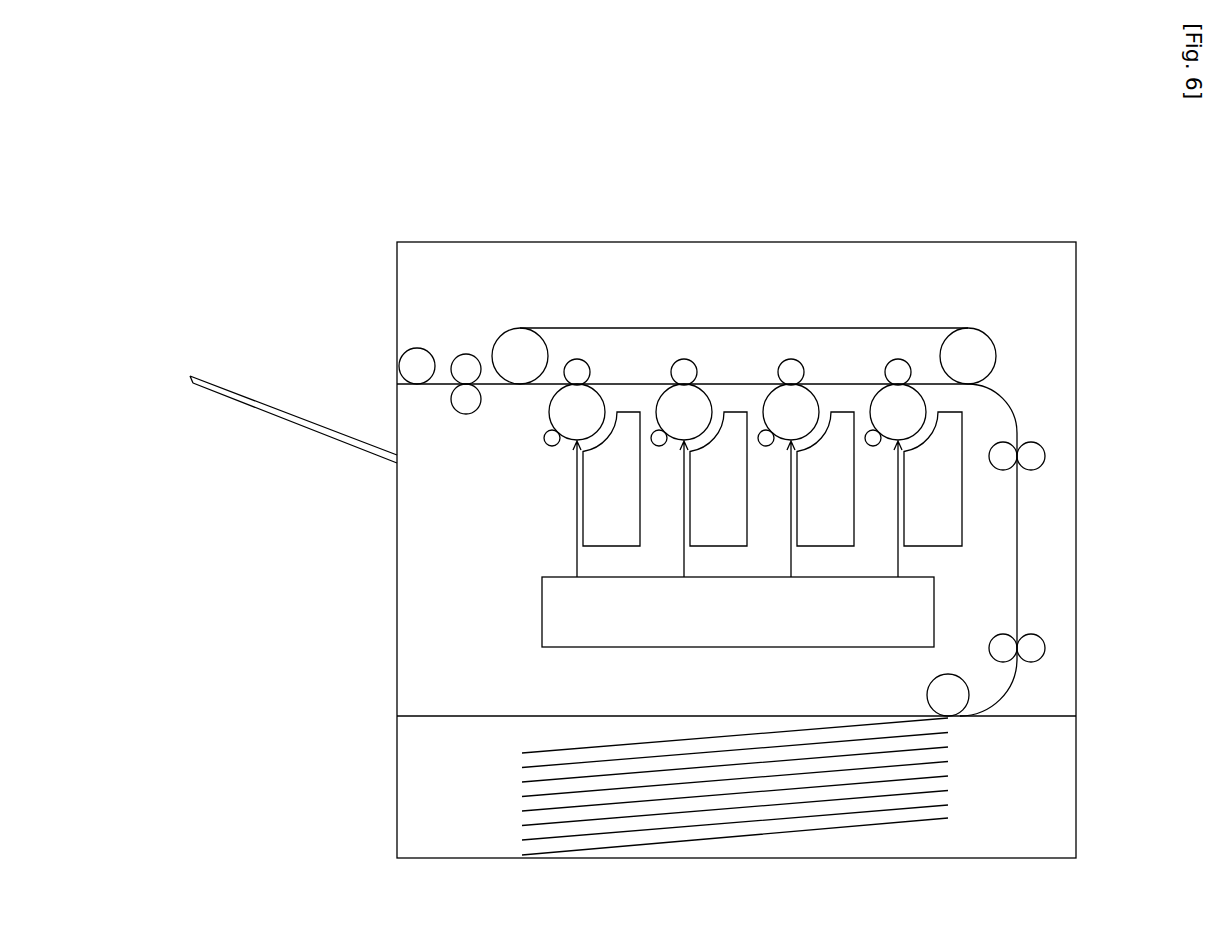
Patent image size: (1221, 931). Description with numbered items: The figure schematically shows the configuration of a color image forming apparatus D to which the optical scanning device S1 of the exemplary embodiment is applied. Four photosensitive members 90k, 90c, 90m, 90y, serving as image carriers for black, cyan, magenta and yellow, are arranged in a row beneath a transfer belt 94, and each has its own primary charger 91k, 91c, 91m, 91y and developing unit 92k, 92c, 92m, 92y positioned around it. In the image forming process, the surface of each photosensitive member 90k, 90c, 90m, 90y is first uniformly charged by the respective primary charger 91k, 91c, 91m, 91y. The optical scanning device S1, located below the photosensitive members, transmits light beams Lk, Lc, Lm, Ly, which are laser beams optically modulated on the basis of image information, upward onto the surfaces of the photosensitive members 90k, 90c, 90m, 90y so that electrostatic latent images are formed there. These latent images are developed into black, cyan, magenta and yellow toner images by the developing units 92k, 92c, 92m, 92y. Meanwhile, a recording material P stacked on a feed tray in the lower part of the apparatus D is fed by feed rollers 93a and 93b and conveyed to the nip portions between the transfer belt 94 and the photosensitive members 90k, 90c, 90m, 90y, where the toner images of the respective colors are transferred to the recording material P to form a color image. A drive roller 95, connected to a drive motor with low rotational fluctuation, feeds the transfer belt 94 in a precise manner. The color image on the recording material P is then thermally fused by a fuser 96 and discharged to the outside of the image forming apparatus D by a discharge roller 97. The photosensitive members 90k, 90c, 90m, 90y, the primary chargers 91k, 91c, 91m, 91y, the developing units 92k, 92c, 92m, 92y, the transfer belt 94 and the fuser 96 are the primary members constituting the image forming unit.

The color image forming apparatus D is at (1088, 280).
The transfer belt 94 is at (740, 328).
The drive roller 95 is at (971, 341).
The fuser 96 is at (466, 356).
The discharge roller 97 is at (399, 365).
The photosensitive member 90k is at (554, 409).
The photosensitive member 90c is at (669, 402).
The photosensitive member 90m is at (776, 402).
The photosensitive member 90y is at (882, 402).
The primary charger 91k is at (552, 447).
The primary charger 91c is at (659, 447).
The primary charger 91m is at (766, 447).
The primary charger 91y is at (873, 447).
The developing unit 92k is at (628, 531).
The developing unit 92c is at (737, 531).
The developing unit 92m is at (844, 531).
The developing unit 92y is at (963, 520).
The light beam Lk is at (577, 565).
The light beam Lc is at (684, 565).
The light beam Lm is at (791, 565).
The light beam Ly is at (898, 565).
The optical scanning device S1 is at (542, 613).
The feed roller 93a is at (940, 690).
The feed roller 93b is at (1046, 454).
The recording material P is at (526, 752).